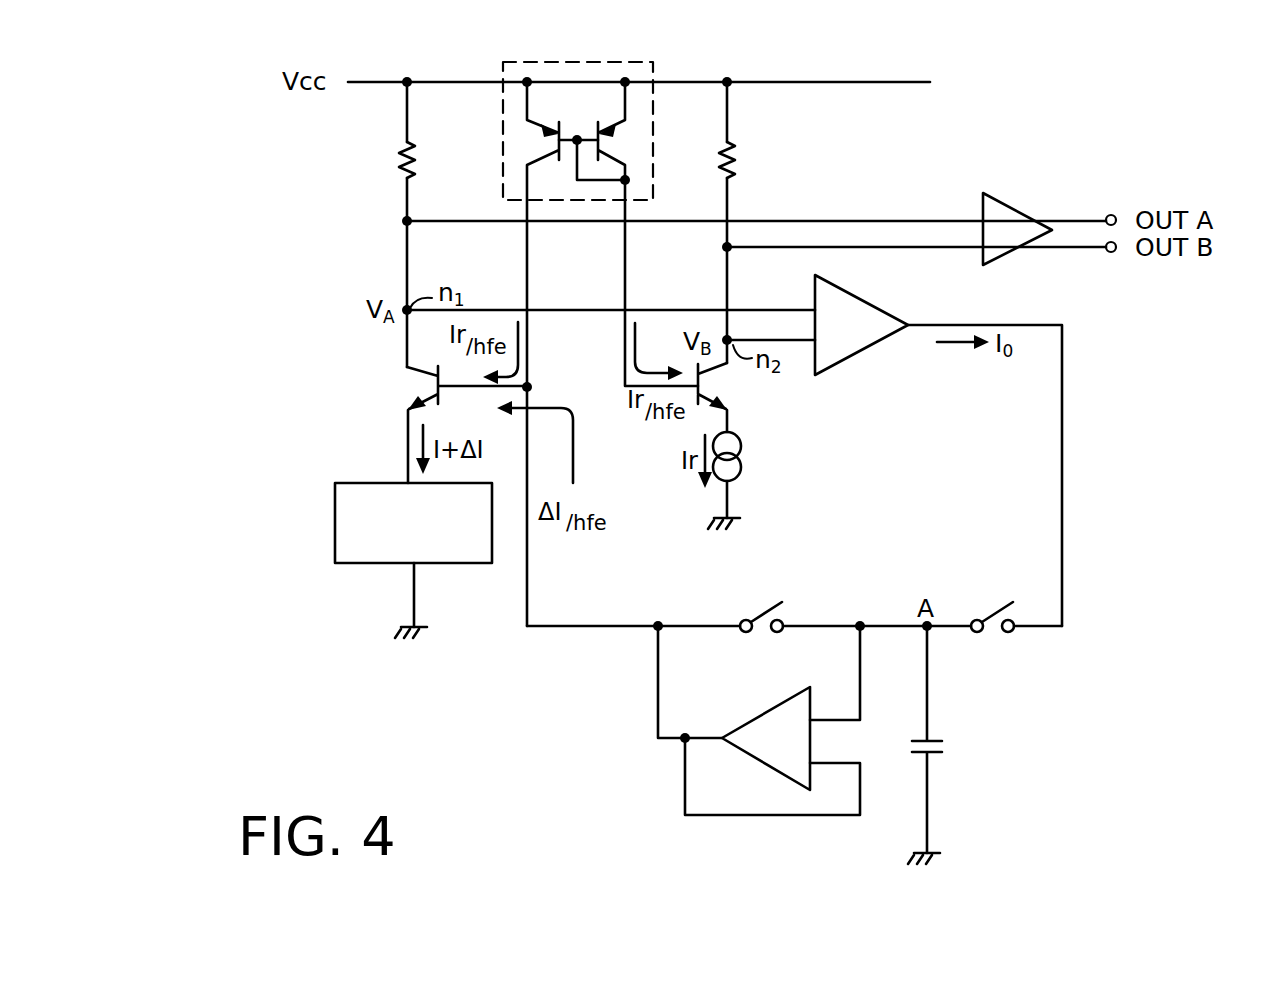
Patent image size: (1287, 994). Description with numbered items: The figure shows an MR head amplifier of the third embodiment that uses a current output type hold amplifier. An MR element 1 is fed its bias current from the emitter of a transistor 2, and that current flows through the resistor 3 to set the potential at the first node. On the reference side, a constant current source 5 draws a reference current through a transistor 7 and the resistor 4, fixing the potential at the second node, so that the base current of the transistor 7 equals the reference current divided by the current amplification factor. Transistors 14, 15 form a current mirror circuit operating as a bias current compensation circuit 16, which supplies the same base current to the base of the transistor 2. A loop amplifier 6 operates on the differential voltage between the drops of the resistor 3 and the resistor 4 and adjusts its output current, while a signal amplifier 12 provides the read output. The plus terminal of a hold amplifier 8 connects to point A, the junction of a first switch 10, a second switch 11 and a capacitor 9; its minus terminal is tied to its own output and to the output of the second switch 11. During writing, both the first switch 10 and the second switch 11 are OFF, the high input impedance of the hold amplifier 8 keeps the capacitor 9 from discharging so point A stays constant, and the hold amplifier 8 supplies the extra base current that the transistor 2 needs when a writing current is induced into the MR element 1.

The MR element 1 is at (335, 537).
The transistor 2 is at (420, 396).
The resistor 3 is at (403, 168).
The resistor 4 is at (735, 168).
The constant current source 5 is at (744, 468).
The loop amplifier 6 is at (855, 357).
The transistor 7 is at (718, 385).
The hold amplifier 8 is at (766, 712).
The capacitor 9 is at (945, 748).
The first switch 10 is at (990, 637).
The second switch 11 is at (758, 638).
The signal amplifier 12 is at (1010, 212).
The transistor 14 is at (530, 149).
The transistor 15 is at (618, 149).
The bias current compensation circuit 16 is at (575, 325).